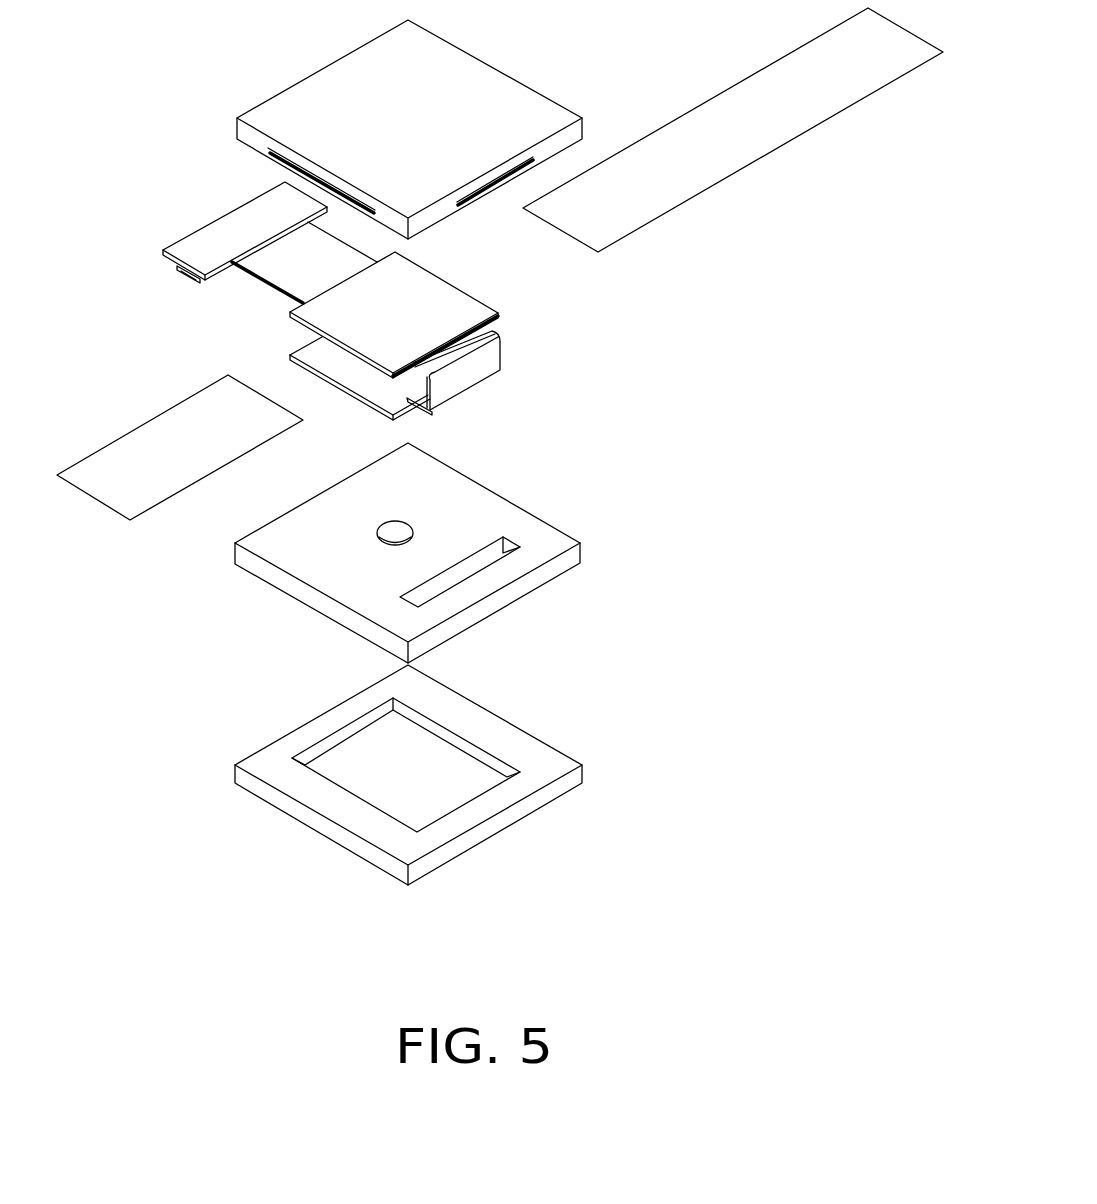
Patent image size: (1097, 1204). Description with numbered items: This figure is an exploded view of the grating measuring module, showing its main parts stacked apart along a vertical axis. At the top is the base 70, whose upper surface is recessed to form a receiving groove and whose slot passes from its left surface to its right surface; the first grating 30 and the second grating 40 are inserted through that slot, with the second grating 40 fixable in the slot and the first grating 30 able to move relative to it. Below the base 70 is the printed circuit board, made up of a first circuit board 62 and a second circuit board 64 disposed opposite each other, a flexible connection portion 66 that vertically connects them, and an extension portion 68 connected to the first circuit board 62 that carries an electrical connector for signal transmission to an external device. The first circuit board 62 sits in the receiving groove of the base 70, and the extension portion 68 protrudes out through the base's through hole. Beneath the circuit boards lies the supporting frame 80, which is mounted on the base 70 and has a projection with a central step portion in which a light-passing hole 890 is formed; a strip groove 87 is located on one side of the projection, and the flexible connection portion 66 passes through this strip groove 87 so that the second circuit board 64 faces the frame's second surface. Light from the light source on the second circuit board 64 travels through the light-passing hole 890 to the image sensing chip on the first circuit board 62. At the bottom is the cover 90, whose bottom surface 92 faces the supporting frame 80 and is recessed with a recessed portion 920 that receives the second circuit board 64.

The first grating 30 is at (788, 68).
The second grating 40 is at (183, 415).
The first circuit board 62 is at (392, 397).
The second circuit board 64 is at (470, 312).
The flexible connection portion 66 is at (490, 360).
The extension portion 68 is at (217, 230).
The base 70 is at (448, 63).
The supporting frame 80 is at (540, 500).
The strip groove 87 is at (487, 560).
The light-passing hole 890 is at (407, 530).
The cover 90 is at (436, 775).
The bottom surface 92 is at (553, 763).
The recessed portion 920 is at (447, 757).